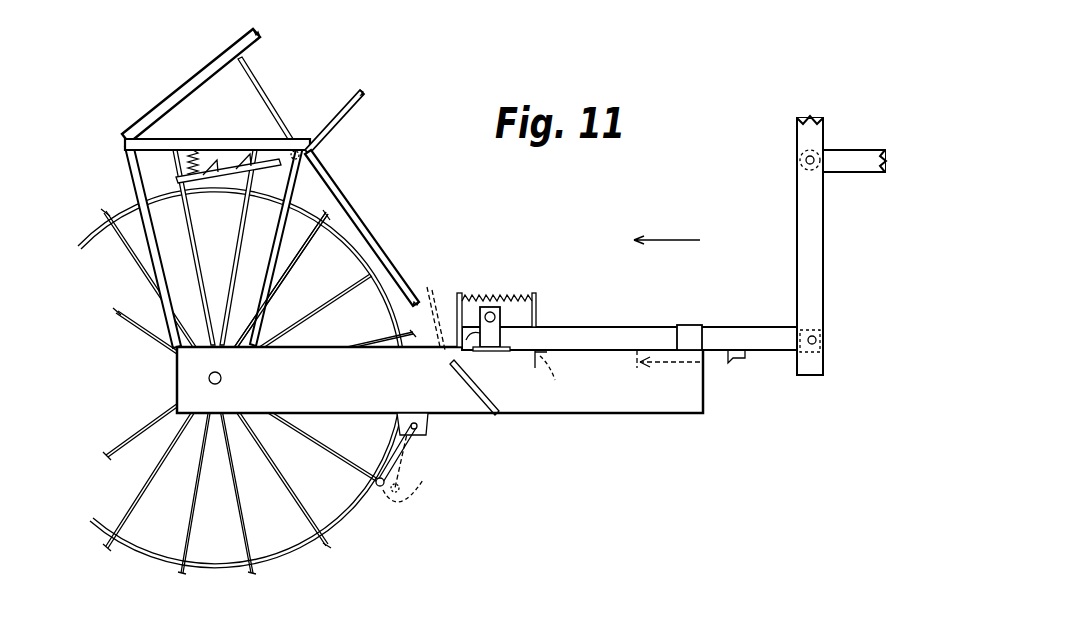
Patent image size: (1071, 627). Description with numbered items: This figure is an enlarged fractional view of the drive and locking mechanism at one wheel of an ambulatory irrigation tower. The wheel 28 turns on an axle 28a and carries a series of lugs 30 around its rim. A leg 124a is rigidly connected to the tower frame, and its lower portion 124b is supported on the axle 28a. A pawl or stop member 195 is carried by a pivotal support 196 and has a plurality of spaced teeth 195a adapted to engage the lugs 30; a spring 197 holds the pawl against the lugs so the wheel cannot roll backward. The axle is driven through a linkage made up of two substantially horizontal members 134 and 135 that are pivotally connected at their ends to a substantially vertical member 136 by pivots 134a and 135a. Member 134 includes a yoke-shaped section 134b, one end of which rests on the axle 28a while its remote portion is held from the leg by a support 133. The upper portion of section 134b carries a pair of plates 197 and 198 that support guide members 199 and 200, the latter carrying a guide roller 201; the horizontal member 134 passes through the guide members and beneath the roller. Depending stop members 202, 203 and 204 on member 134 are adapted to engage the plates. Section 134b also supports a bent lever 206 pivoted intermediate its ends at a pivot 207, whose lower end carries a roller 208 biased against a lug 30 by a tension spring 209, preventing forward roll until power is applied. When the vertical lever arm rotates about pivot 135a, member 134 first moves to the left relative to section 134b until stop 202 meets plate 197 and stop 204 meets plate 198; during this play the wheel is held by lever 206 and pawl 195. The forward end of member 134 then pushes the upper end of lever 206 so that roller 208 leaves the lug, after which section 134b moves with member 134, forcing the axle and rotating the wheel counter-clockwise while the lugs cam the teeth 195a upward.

The wheel 28 is at (337, 247).
The axle 28a is at (209, 378).
The lugs 30 is at (336, 212).
The leg 124a is at (178, 100).
The lower portion of leg 124b is at (160, 268).
The support 133 is at (367, 229).
The horizontal member 134 is at (593, 333).
The pivot 134a is at (845, 348).
The section 134b is at (537, 405).
The horizontal member 135 is at (848, 152).
The pivot 135a is at (805, 160).
The vertical member 136 is at (797, 240).
The pawl member 195 is at (237, 156).
The teeth 195a is at (198, 187).
The pivotal support 196 is at (323, 148).
The spring / plate 197 is at (185, 170).
The plate 198 is at (490, 352).
The guide member 199 is at (688, 325).
The guide member 200 is at (480, 333).
The guide roller 201 is at (492, 308).
The stop member 202 is at (738, 360).
The stop member 203 is at (640, 366).
The stop member 204 is at (545, 366).
The bent lever 206 is at (455, 308).
The pivot 207 is at (417, 432).
The roller 208 is at (413, 498).
The tension spring 209 is at (513, 297).